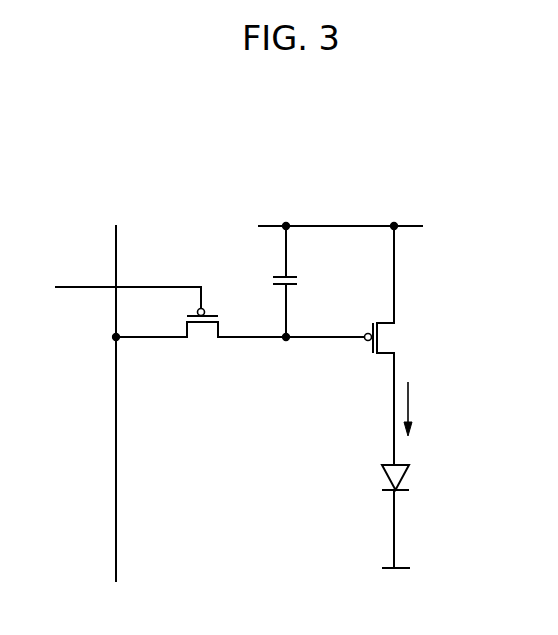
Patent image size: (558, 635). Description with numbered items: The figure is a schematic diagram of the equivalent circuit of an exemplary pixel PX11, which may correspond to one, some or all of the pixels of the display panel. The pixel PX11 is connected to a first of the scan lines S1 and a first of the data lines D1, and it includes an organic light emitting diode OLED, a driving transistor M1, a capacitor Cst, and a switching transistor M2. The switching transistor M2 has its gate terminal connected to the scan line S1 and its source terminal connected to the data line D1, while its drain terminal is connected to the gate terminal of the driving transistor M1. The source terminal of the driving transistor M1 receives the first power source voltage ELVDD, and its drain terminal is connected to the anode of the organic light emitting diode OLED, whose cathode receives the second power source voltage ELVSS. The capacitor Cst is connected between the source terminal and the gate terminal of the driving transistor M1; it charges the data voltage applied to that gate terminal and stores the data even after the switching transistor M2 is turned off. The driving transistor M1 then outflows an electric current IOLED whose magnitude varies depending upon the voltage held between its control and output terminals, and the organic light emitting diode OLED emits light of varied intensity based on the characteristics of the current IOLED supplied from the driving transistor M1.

The pixel PX11 is at (412, 166).
The data line D1 is at (116, 388).
The scan line S1 is at (116, 291).
The switching transistor M2 is at (200, 338).
The driving transistor M1 is at (354, 345).
The capacitor Cst is at (301, 283).
The first power source voltage ELVDD is at (340, 212).
The second power source voltage ELVSS is at (395, 545).
The organic light emitting diode OLED is at (422, 478).
The electric current IOLED is at (428, 409).